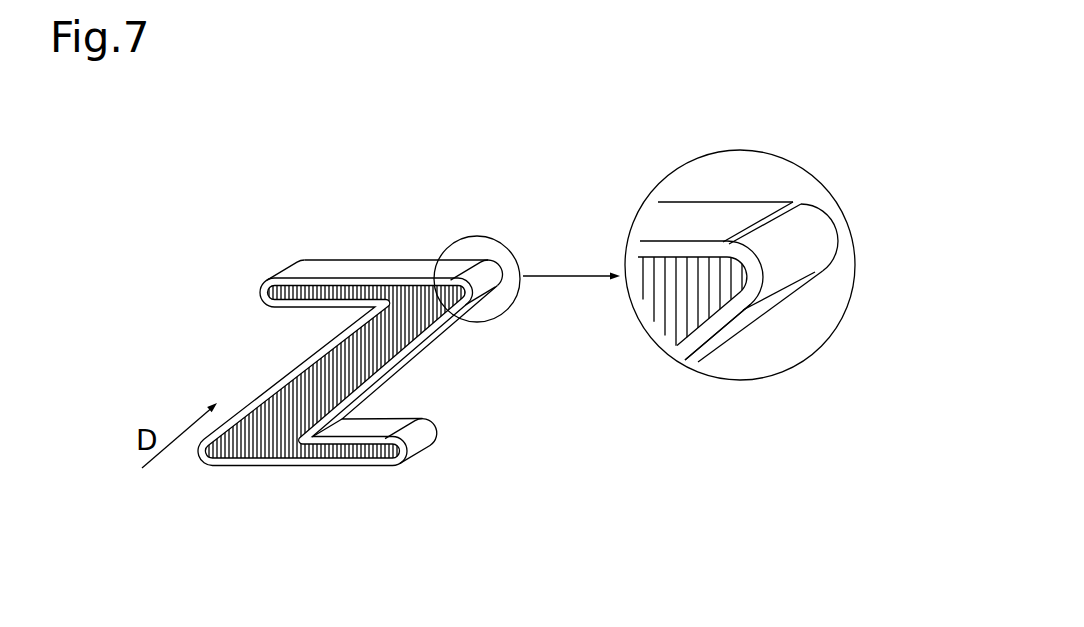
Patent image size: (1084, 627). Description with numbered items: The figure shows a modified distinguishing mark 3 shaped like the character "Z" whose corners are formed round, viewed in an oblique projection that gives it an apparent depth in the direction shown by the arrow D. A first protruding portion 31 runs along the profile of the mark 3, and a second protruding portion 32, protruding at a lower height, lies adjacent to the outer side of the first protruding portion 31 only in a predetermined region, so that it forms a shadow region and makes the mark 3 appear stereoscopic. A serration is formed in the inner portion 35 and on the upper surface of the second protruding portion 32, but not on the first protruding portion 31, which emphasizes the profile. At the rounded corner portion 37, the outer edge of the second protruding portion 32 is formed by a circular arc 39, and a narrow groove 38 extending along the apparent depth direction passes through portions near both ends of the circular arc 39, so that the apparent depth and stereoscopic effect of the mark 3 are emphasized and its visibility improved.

The distinguishing mark 3 is at (534, 340).
The first protruding portion 31 is at (323, 280).
The second protruding portion 32 is at (388, 272).
The inner portion 35 is at (240, 440).
The corner portion 37 is at (509, 296).
The narrow groove 38 is at (772, 202).
The circular arc 39 is at (838, 240).